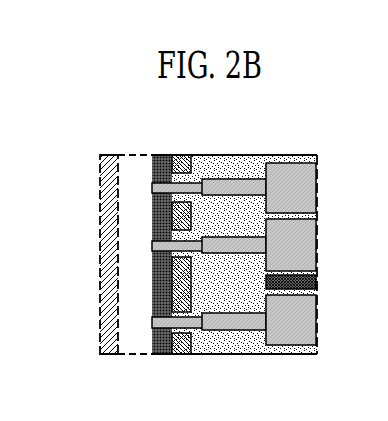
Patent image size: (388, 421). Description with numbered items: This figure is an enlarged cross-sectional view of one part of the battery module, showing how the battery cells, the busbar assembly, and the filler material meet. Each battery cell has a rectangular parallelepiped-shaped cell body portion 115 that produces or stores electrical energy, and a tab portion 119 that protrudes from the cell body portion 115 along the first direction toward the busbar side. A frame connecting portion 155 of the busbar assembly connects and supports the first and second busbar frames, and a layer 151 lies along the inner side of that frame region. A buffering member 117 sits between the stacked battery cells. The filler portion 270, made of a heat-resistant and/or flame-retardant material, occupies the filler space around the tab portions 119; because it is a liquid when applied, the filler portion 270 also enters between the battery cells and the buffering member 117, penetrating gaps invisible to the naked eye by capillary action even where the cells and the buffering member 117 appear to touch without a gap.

The cell body portion 115 is at (290, 173).
The buffering member 117 is at (317, 283).
The tab portion 119 is at (233, 185).
The semiconductor layer 151 is at (161, 165).
The frame connecting portion 155 is at (178, 158).
The filler portion 270 is at (235, 288).